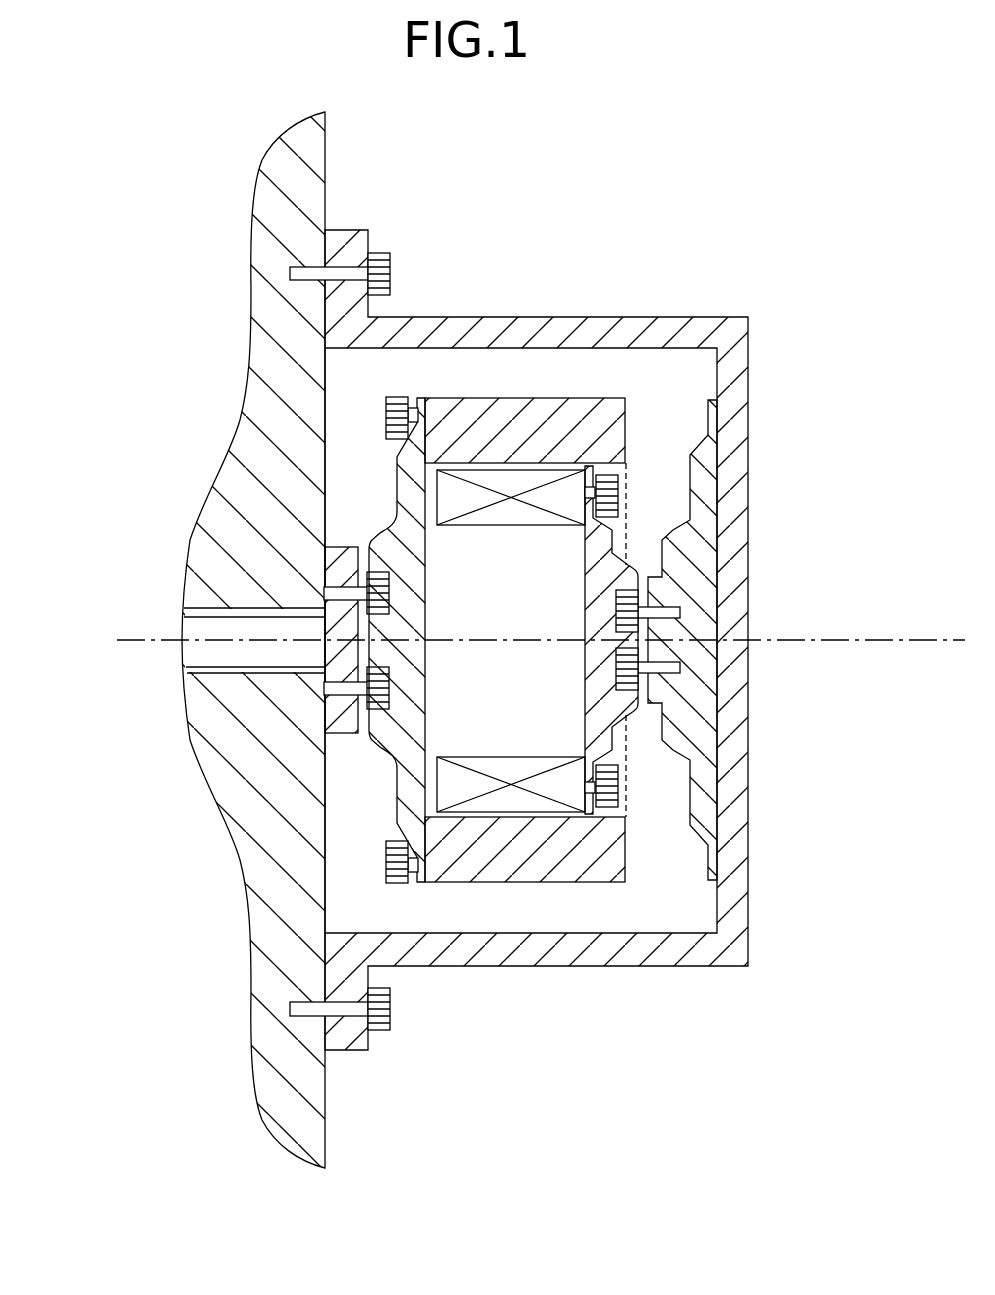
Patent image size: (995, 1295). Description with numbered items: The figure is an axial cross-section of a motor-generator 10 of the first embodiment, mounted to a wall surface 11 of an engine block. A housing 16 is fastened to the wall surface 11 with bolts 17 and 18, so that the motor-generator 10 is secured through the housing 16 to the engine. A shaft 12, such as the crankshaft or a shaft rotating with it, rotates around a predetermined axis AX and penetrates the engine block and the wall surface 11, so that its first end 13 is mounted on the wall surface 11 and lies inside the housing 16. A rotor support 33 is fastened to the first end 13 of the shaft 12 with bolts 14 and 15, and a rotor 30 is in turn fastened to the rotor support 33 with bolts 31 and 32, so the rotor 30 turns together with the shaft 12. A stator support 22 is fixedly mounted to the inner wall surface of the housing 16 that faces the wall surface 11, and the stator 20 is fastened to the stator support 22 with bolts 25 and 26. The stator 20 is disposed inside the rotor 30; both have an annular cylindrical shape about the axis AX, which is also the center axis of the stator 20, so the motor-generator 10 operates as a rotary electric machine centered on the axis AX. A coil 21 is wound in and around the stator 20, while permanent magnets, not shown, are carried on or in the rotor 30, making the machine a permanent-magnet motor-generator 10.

The motor-generator 10 is at (766, 164).
The wall surface 11 is at (265, 243).
The shaft 12 is at (215, 627).
The first end 13 is at (327, 673).
The bolt 14 is at (346, 565).
The bolt 15 is at (355, 720).
The housing 16 is at (712, 317).
The bolt 17 is at (383, 252).
The bolt 18 is at (383, 1030).
The stator 20 is at (623, 730).
The coil 21 is at (538, 813).
The stator support 22 is at (702, 560).
The bolt 25 is at (680, 612).
The bolt 26 is at (682, 672).
The rotor 30 is at (530, 420).
The bolt 31 is at (402, 397).
The bolt 32 is at (395, 883).
The rotor support 33 is at (407, 787).
The axis AX is at (137, 640).